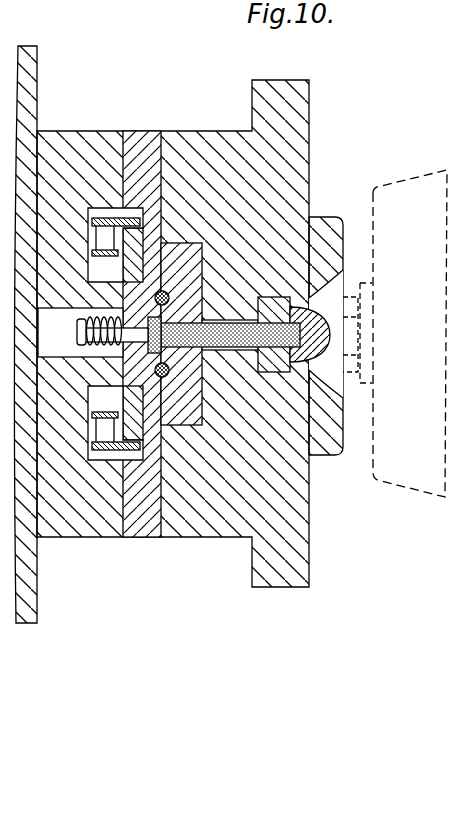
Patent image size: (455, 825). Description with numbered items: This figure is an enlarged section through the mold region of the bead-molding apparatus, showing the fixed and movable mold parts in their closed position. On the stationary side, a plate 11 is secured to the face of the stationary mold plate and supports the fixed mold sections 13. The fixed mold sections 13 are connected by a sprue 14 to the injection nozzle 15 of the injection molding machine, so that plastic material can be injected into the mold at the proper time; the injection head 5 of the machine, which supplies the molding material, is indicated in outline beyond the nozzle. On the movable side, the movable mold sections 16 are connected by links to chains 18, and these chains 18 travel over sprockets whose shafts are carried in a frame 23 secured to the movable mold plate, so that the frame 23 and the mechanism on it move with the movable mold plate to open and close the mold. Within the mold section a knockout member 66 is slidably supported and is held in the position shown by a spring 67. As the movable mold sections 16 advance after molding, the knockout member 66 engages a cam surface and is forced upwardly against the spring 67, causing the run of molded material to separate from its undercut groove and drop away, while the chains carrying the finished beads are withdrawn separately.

The injection head 5 is at (408, 482).
The plate 11 is at (218, 527).
The fixed mold sections 13 is at (202, 250).
The sprue 14 is at (232, 320).
The injection nozzle 15 is at (290, 300).
The movable mold sections 16 is at (133, 423).
The chains 18 is at (116, 334).
The frame 23 is at (37, 606).
The knockout member 66 is at (80, 330).
The spring 67 is at (88, 340).